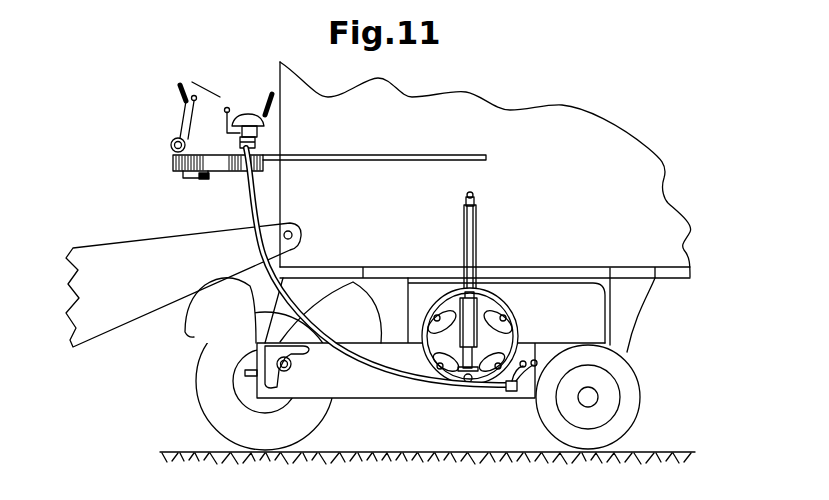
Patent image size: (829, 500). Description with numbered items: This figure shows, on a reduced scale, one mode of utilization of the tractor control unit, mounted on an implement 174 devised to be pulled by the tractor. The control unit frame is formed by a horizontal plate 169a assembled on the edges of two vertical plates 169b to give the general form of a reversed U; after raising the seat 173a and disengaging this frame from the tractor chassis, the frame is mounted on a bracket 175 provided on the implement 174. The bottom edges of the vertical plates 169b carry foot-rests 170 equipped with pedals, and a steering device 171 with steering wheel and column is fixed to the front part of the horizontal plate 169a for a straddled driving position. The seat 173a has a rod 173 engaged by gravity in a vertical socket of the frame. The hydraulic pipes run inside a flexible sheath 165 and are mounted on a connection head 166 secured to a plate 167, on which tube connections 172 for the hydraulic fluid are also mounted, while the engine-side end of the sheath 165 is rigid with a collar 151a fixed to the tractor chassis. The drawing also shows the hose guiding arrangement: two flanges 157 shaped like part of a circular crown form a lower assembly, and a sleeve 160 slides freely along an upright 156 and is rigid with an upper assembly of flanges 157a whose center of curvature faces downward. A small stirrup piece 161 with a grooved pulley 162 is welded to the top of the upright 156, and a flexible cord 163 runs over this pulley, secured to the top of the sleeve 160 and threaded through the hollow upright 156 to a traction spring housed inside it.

The collar 151a is at (512, 391).
The upright 156 is at (480, 352).
The flanges 157 is at (432, 357).
The flanges 157a is at (506, 324).
The sleeve 160 is at (458, 328).
The stirrup piece 161 is at (465, 205).
The grooved pulley 162 is at (472, 194).
The flexible cord 163 is at (477, 232).
The flexible hose 165 is at (258, 212).
The connection head 166 is at (266, 126).
The plate 167 is at (258, 142).
The horizontal plate 169a is at (209, 162).
The vertical plates 169b is at (222, 172).
The foot-rests 170 is at (181, 160).
The steering device 171 is at (171, 125).
The tube connections 172 is at (232, 172).
The rod 173 is at (251, 108).
The seat 173a is at (268, 91).
The implement 174 is at (581, 118).
The bracket 175 is at (270, 158).